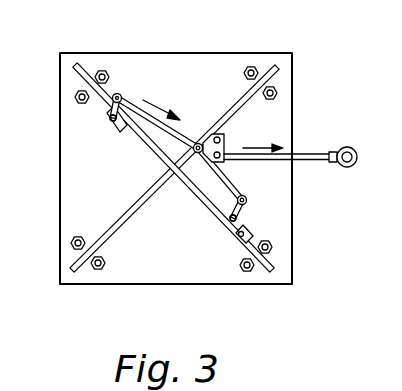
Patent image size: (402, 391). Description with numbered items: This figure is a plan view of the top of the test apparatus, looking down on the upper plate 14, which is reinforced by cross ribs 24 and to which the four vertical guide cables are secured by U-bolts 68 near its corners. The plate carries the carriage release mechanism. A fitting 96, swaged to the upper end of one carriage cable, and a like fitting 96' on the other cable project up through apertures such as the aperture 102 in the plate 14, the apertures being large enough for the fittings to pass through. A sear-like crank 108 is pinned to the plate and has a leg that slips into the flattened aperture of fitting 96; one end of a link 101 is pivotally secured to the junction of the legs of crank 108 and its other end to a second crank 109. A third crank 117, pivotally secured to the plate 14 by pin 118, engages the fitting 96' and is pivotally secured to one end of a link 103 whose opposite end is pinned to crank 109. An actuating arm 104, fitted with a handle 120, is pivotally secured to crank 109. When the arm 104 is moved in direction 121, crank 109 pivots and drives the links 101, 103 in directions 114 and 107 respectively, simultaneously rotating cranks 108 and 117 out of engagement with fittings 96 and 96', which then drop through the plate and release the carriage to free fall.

The upper plate 14 is at (203, 58).
The cross ribs 24 is at (174, 167).
The U-bolts 68 is at (99, 70).
The fitting 96 is at (71, 119).
The fitting 96' is at (257, 216).
The link 101 is at (183, 133).
The aperture 102 is at (101, 109).
The link 103 is at (212, 210).
The actuating arm 104 is at (307, 155).
The direction 107 is at (243, 186).
The crank 108 is at (138, 89).
The second crank 109 is at (228, 143).
The direction 114 is at (165, 103).
The third crank 117 is at (252, 232).
The pin 118 is at (230, 227).
The handle 120 is at (354, 166).
The direction 121 is at (262, 145).